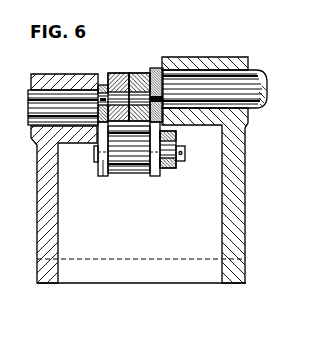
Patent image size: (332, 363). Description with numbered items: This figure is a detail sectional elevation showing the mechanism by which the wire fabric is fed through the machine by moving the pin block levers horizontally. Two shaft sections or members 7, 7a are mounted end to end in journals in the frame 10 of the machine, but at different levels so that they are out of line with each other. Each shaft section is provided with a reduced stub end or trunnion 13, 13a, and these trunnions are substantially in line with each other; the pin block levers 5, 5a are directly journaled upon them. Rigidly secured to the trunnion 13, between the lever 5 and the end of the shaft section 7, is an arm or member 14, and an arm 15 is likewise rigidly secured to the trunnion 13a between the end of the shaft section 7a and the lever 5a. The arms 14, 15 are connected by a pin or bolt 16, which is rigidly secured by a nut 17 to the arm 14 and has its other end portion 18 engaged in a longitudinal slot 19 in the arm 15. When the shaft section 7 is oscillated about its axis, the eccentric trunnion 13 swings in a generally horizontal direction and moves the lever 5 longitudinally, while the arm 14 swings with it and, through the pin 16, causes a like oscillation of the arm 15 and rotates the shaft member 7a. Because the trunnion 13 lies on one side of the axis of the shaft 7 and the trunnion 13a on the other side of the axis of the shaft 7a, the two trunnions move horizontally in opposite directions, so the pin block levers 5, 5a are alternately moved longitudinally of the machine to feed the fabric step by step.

The pin block lever 5 is at (143, 73).
The pin block lever 5a is at (116, 73).
The shaft section 7 is at (236, 78).
The shaft section 7a is at (44, 97).
The frame 10 is at (242, 206).
The trunnion 13 is at (157, 68).
The trunnion 13a is at (105, 90).
The arm 14 is at (158, 176).
The arm 15 is at (107, 173).
The pin 16 is at (184, 152).
The nut 17 is at (177, 138).
The end portion 18 is at (94, 154).
The longitudinal slot 19 is at (103, 170).